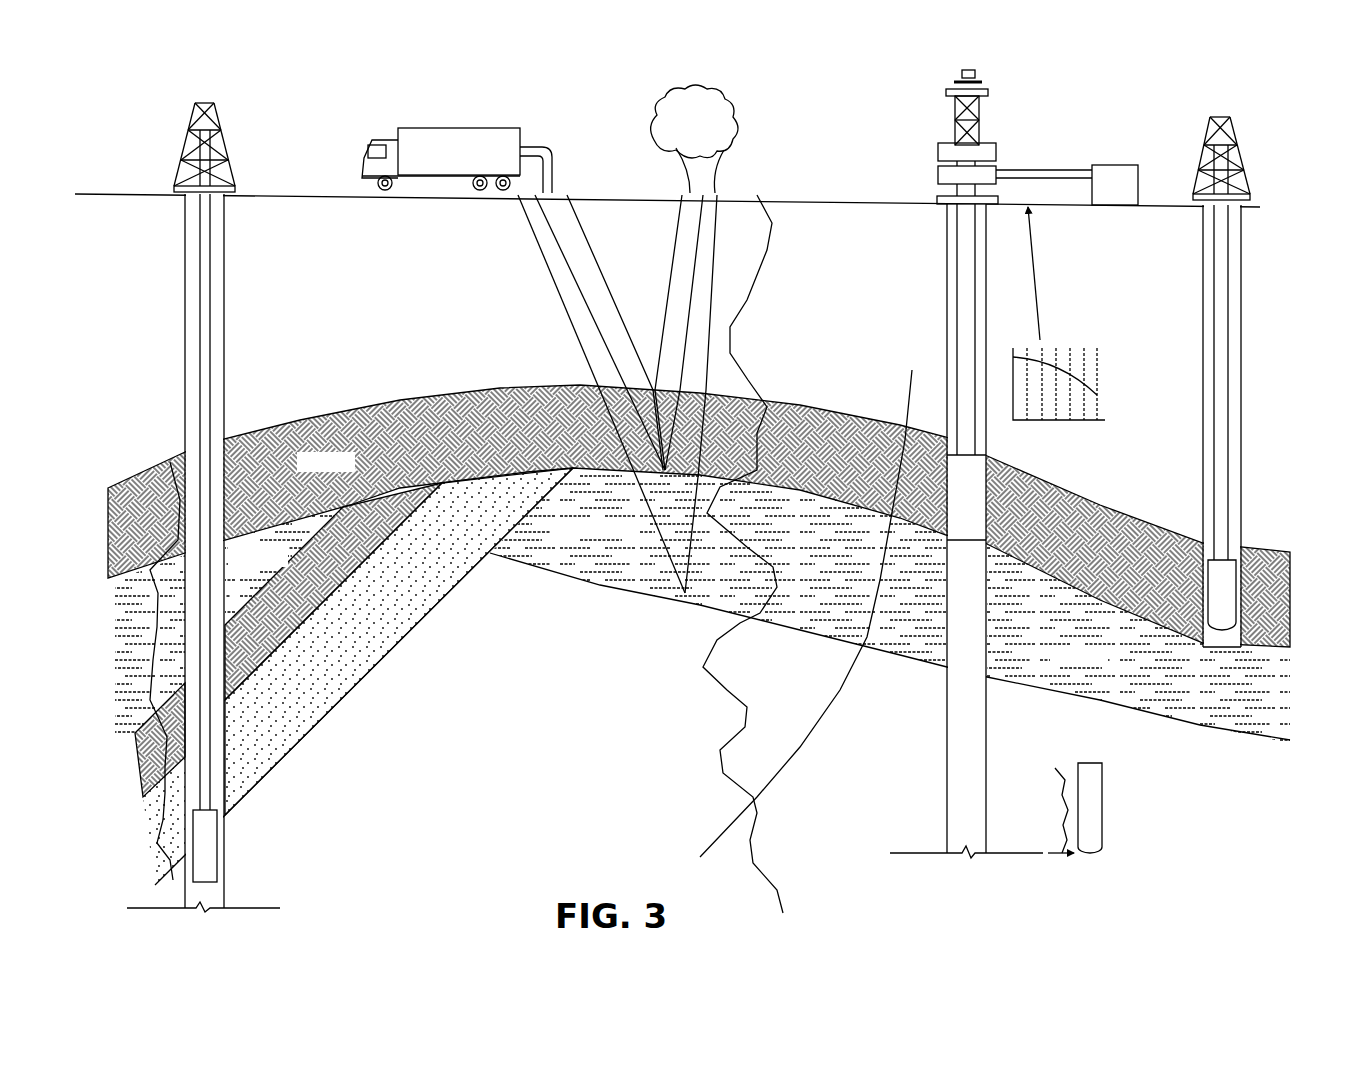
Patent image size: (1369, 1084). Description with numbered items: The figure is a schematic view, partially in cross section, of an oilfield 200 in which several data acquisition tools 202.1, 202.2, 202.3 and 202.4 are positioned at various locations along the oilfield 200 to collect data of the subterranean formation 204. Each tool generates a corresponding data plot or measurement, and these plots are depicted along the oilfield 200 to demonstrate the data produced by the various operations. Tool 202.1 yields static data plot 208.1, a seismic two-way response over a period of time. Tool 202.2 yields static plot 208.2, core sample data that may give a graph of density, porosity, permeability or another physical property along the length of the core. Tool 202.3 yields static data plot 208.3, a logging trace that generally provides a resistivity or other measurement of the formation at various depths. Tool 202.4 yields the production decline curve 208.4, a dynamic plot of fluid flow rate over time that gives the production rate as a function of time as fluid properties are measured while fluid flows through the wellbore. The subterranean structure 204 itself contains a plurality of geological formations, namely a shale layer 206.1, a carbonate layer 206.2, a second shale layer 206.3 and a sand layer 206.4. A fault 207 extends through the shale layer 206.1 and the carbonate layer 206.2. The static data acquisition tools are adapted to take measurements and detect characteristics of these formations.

The oilfield 200 is at (1182, 126).
The data acquisition tool 202.1 is at (436, 128).
The data acquisition tool 202.2 is at (1245, 606).
The data acquisition tool 202.3 is at (218, 850).
The data acquisition tool 202.4 is at (990, 515).
The subterranean formation 204 is at (545, 676).
The shale layer 206.1 is at (325, 474).
The carbonate layer 206.2 is at (256, 569).
The shale layer 206.3 is at (312, 604).
The sand layer 206.4 is at (362, 644).
The fault 207 is at (910, 395).
The static data plot 208.1 is at (740, 726).
The static plot 208.2 is at (1052, 800).
The static data plot 208.3 is at (150, 631).
The production decline curve 208.4 is at (1060, 420).